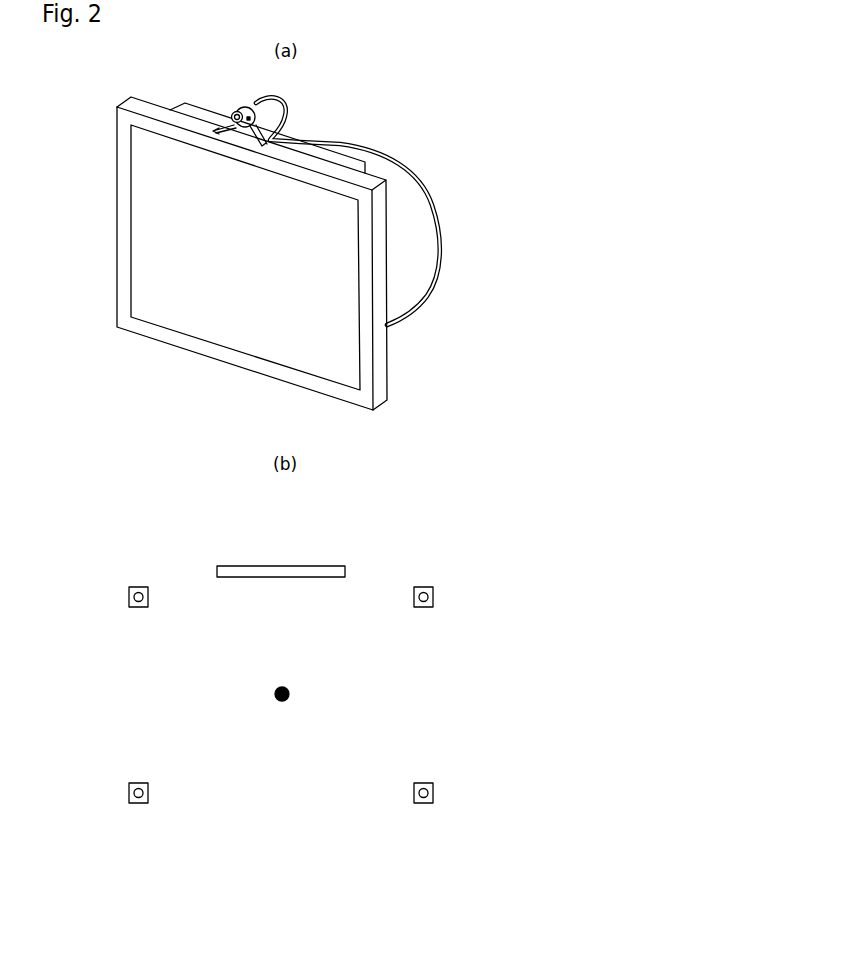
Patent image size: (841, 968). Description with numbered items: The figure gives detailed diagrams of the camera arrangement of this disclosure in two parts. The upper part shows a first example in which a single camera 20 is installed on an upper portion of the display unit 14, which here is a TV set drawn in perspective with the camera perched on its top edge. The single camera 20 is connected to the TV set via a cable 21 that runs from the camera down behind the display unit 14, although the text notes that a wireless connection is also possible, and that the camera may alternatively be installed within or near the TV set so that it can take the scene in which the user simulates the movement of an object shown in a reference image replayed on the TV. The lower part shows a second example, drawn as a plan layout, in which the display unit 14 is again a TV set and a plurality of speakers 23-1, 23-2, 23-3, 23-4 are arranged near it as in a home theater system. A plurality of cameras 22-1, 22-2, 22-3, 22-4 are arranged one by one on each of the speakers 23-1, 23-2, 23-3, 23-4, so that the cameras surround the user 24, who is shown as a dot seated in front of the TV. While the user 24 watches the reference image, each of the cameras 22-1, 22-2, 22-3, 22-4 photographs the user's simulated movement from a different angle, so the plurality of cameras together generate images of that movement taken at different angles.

The display unit 14 is at (97, 118).
The single camera 20 is at (239, 106).
The cable 21 is at (433, 204).
The camera 22-1 is at (137, 609).
The camera 22-2 is at (422, 609).
The camera 22-3 is at (137, 805).
The camera 22-4 is at (422, 805).
The speaker 23-1 is at (137, 586).
The speaker 23-2 is at (422, 586).
The speaker 23-3 is at (137, 782).
The speaker 23-4 is at (422, 782).
The user 24 is at (282, 702).